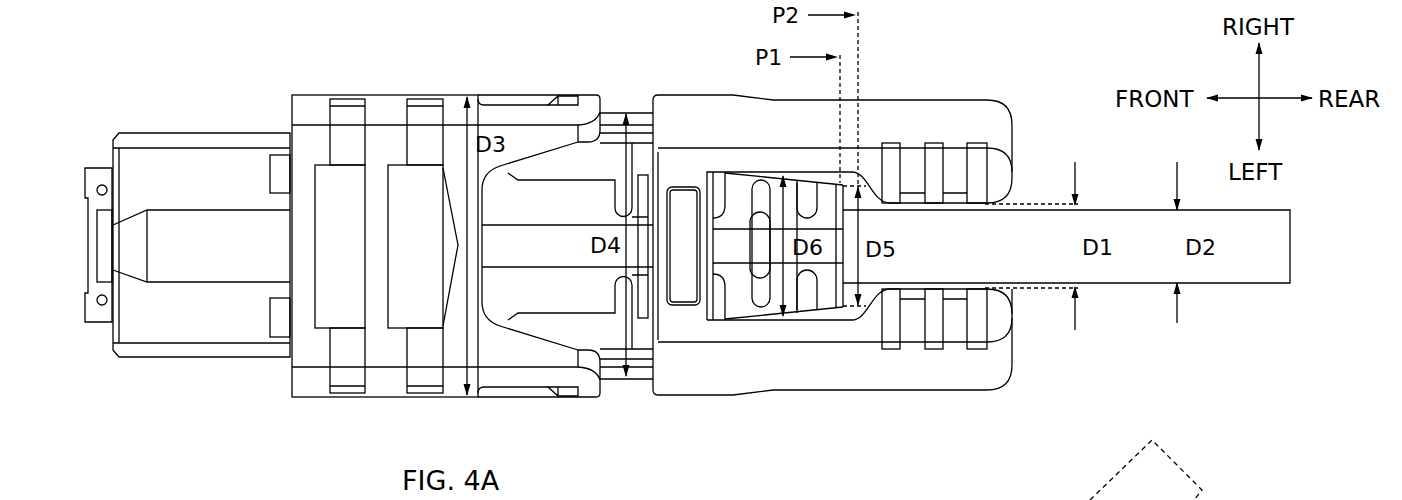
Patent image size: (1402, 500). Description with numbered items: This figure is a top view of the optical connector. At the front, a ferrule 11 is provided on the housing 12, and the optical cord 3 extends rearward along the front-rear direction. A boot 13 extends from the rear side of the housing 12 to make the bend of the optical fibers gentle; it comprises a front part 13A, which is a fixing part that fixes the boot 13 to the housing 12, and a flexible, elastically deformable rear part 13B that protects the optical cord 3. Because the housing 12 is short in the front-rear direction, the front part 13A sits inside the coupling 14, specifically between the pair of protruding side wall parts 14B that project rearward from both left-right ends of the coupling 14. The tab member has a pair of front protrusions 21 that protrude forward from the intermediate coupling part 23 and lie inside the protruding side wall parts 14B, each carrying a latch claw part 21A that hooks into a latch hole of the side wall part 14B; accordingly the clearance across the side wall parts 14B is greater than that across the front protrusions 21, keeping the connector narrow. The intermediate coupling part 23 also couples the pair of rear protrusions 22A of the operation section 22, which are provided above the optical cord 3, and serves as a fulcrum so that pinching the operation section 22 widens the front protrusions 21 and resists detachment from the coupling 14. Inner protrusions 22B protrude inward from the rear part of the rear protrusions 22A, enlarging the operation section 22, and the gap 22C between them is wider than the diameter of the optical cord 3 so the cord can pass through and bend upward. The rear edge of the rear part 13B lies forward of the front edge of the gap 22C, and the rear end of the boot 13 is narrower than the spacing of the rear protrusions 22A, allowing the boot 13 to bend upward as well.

The optical cord 3 is at (1258, 285).
The ferrule 11 is at (99, 172).
The housing 12 is at (198, 140).
The boot 13 is at (667, 336).
The front part 13A is at (550, 297).
The rear part 13B is at (763, 308).
The coupling 14 is at (387, 98).
The protruding side wall parts 14B is at (587, 100).
The front protrusions 21 is at (640, 110).
The latch claw part 21A is at (557, 95).
The operation section 22 is at (982, 246).
The rear protrusions 22A is at (912, 105).
The inner protrusions 22B is at (965, 230).
The gap 22C is at (1019, 295).
The intermediate coupling part 23 is at (690, 98).